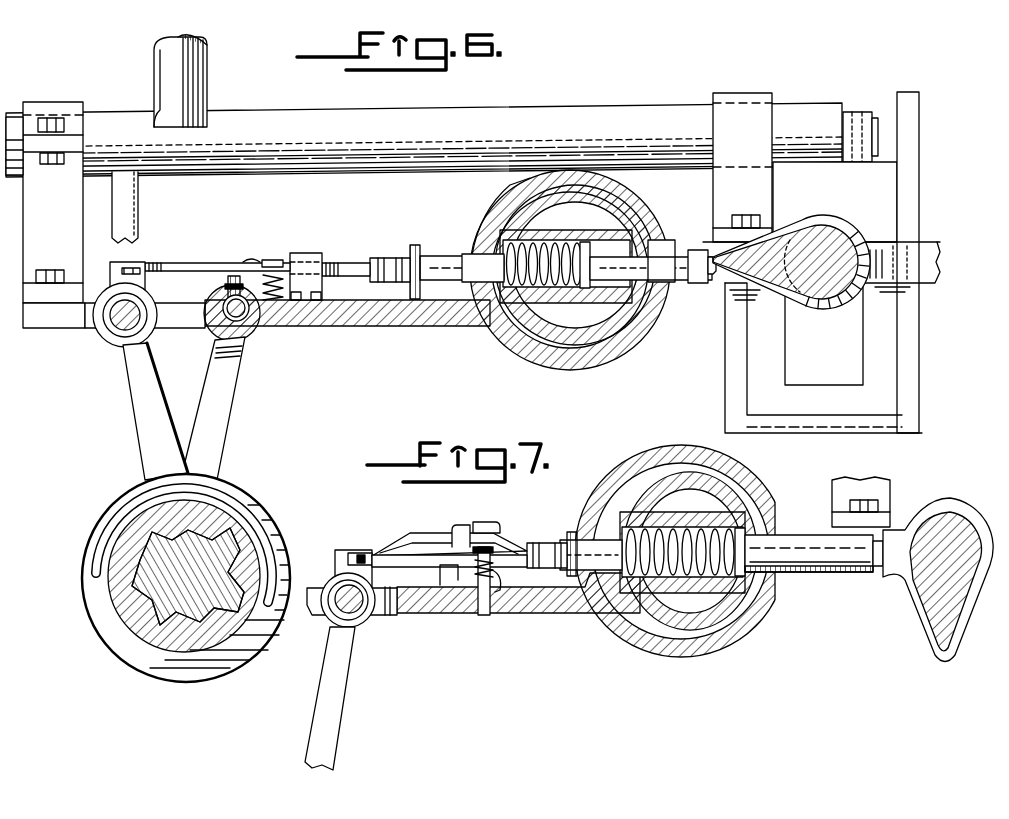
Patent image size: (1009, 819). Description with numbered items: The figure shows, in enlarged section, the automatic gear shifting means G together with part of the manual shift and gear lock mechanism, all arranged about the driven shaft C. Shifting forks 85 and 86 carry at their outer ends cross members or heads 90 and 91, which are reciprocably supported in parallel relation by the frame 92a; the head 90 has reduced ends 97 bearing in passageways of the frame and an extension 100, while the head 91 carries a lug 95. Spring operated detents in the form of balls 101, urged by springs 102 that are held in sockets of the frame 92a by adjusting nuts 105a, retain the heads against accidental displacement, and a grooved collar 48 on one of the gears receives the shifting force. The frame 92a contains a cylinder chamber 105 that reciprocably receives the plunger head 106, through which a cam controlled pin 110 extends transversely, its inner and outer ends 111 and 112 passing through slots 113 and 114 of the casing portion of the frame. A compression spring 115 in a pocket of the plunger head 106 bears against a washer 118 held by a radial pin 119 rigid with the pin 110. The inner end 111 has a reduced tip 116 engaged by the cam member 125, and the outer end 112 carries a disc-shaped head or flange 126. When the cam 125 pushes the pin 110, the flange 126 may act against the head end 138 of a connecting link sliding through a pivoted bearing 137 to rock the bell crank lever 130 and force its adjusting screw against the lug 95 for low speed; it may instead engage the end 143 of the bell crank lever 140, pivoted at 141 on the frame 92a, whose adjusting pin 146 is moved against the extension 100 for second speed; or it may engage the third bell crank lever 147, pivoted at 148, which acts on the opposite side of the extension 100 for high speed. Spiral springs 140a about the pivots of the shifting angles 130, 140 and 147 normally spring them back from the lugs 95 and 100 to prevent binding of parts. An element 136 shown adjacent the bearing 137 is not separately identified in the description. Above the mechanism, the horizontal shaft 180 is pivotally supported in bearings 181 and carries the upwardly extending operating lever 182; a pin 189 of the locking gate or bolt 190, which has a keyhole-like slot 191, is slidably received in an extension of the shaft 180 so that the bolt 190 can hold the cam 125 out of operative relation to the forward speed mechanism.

In FIG. 6, the grooved collar 48 is at (193, 668).
In FIG. 6, the shifting fork 85 is at (222, 430).
In FIG. 7, the shifting fork 85 is at (335, 712).
In FIG. 6, the shifting fork 86 is at (135, 430).
In FIG. 6, the cross member 90 is at (222, 326).
In FIG. 7, the cross member 90 is at (330, 614).
In FIG. 6, the cross member 91 is at (120, 326).
In FIG. 6, the frame 92a is at (333, 326).
In FIG. 7, the frame 92a is at (651, 462).
In FIG. 6, the lug 95 is at (125, 270).
In FIG. 7, the reduced ends 97 is at (356, 607).
In FIG. 7, the extension 100 is at (337, 568).
In FIG. 6, the balls 101 is at (244, 305).
In FIG. 6, the springs 102 is at (222, 298).
In FIG. 6, the cylinder chamber 105 is at (612, 333).
In FIG. 7, the cylinder chamber 105 is at (700, 480).
In FIG. 6, the adjusting nuts 105a is at (232, 290).
In FIG. 6, the plunger head 106 is at (592, 342).
In FIG. 7, the plunger head 106 is at (752, 492).
In FIG. 6, the cam controlled pin 110 is at (655, 258).
In FIG. 7, the cam controlled pin 110 is at (590, 545).
In FIG. 6, the inner end 111 is at (682, 288).
In FIG. 6, the outer end 112 is at (428, 256).
In FIG. 6, the slot 113 is at (697, 250).
In FIG. 6, the slot 114 is at (462, 257).
In FIG. 6, the compression spring 115 is at (526, 302).
In FIG. 7, the compression spring 115 is at (640, 600).
In FIG. 6, the reduced tip 116 is at (708, 288).
In FIG. 6, the washer 118 is at (587, 242).
In FIG. 6, the radial pin 119 is at (642, 215).
In FIG. 6, the cam member 125 is at (775, 232).
In FIG. 7, the cam member 125 is at (932, 615).
In FIG. 6, the disc-shaped head 126 is at (412, 248).
In FIG. 7, the disc-shaped head 126 is at (566, 540).
In FIG. 6, the bell crank lever 130 is at (208, 254).
In FIG. 6, the threaded section 136 is at (350, 263).
In FIG. 6, the pivoted bearing 137 is at (306, 258).
In FIG. 6, the head end 138 is at (385, 263).
In FIG. 7, the bell crank lever 140 is at (445, 530).
In FIG. 6, the spiral springs 140a is at (300, 300).
In FIG. 7, the spiral springs 140a is at (500, 580).
In FIG. 7, the pivot 141 is at (486, 612).
In FIG. 7, the end 143 is at (548, 570).
In FIG. 7, the adjusting pin 146 is at (360, 553).
In FIG. 7, the third bell crank lever 147 is at (458, 536).
In FIG. 7, the pivot 148 is at (498, 528).
In FIG. 6, the shaft 180 is at (430, 128).
In FIG. 6, the bearings 181 is at (62, 108).
In FIG. 6, the operating lever 182 is at (197, 86).
In FIG. 6, the pin 189 is at (853, 112).
In FIG. 6, the locking gate 190 is at (872, 195).
In FIG. 6, the slot 191 is at (857, 361).
In FIG. 6, the driven shaft C is at (175, 625).
In FIG. 6, the automatic gear shifting means G is at (437, 282).